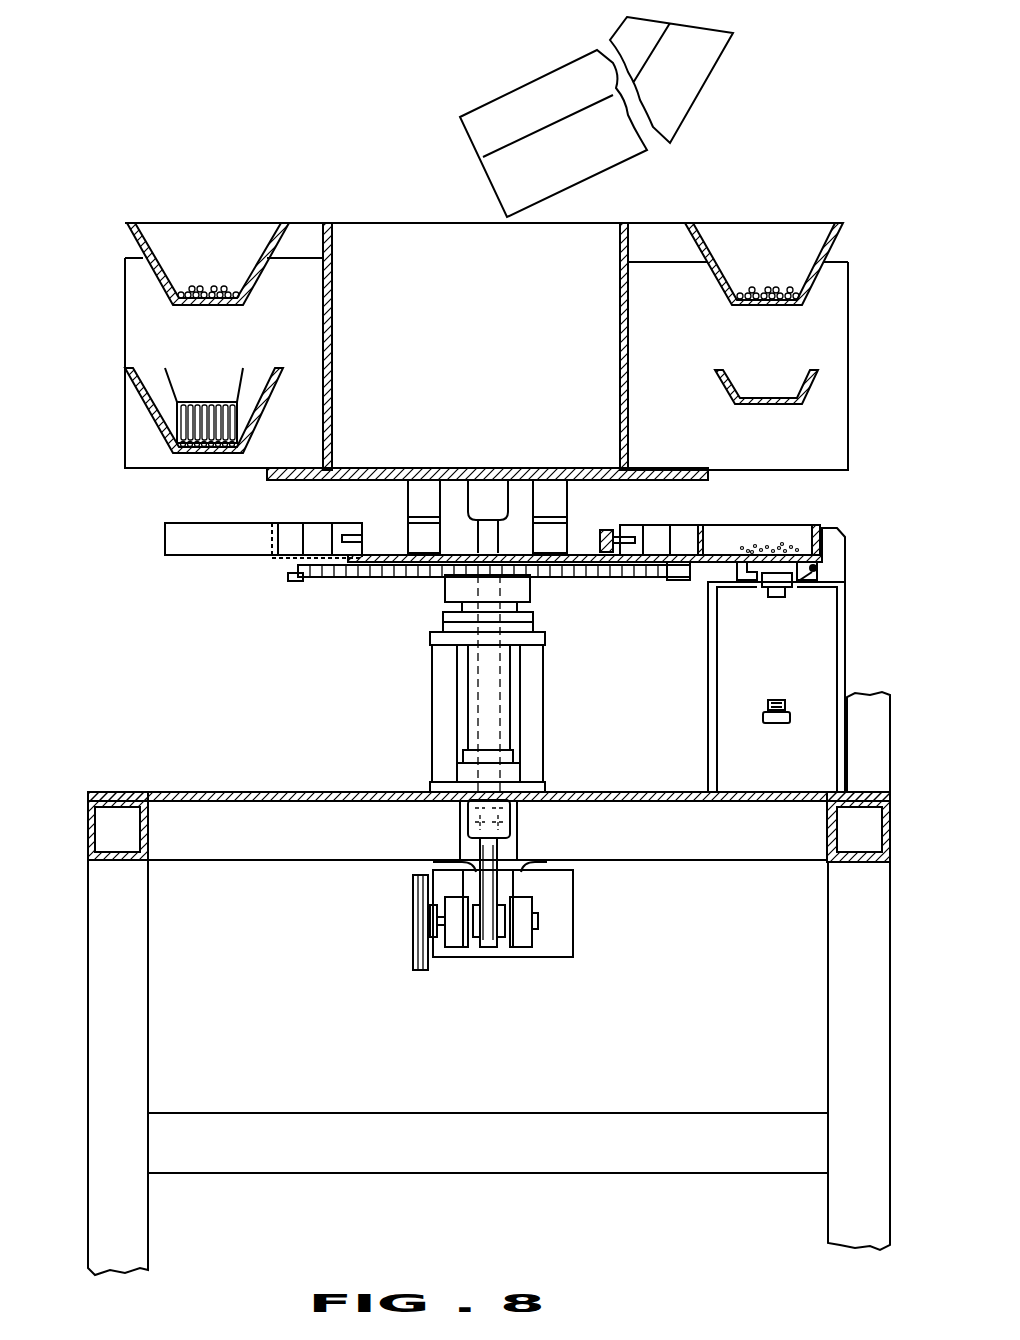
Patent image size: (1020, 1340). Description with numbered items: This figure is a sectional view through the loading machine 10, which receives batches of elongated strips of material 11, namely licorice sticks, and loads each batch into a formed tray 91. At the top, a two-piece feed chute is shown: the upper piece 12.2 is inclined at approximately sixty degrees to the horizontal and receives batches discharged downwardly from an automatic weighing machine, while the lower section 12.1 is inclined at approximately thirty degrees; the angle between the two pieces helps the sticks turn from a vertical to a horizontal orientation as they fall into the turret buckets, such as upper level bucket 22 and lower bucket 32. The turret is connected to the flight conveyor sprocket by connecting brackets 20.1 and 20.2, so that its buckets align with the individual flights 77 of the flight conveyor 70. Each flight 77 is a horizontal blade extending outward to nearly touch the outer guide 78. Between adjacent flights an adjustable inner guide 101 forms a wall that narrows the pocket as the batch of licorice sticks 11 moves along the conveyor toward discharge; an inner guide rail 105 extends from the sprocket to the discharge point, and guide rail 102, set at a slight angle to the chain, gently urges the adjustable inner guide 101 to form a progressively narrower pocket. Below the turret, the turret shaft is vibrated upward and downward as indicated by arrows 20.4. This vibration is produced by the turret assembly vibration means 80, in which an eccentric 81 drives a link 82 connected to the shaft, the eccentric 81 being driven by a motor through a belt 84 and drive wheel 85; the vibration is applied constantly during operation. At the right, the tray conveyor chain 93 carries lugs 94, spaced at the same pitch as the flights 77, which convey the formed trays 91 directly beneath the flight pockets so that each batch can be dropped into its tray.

The loading machine 10 is at (284, 176).
The elongated strips of material 11 is at (772, 542).
The lower section of feed chute 12.1 is at (607, 163).
The upper piece of feed chute 12.2 is at (685, 103).
The upper level bucket 22 is at (830, 242).
The lower bucket 32 is at (807, 370).
The connecting bracket 20.1 is at (422, 487).
The connecting bracket 20.2 is at (550, 490).
The shaft vibration direction 20.4 is at (500, 713).
The flight conveyor 70 is at (658, 582).
The flight 77 is at (205, 547).
The outer guide 78 is at (813, 530).
The turret assembly vibration means 80 is at (488, 910).
The eccentric 81 is at (535, 927).
The link 82 is at (485, 950).
The belt 84 is at (420, 925).
The drive wheel 85 is at (413, 967).
The formed tray 91 is at (815, 568).
The tray conveyor chain 93 is at (773, 597).
The lug 94 is at (768, 582).
The adjustable inner guide 101 is at (705, 542).
The guide rail 102 is at (630, 543).
The inner guide rail 105 is at (602, 551).